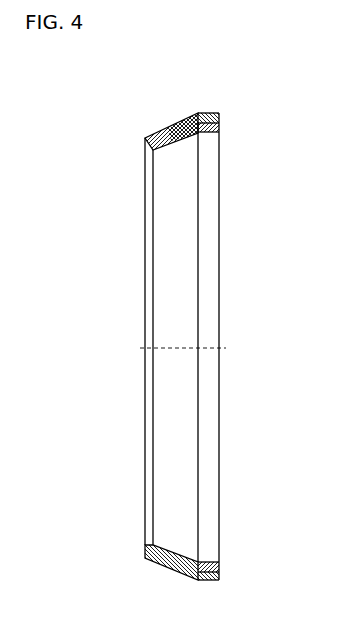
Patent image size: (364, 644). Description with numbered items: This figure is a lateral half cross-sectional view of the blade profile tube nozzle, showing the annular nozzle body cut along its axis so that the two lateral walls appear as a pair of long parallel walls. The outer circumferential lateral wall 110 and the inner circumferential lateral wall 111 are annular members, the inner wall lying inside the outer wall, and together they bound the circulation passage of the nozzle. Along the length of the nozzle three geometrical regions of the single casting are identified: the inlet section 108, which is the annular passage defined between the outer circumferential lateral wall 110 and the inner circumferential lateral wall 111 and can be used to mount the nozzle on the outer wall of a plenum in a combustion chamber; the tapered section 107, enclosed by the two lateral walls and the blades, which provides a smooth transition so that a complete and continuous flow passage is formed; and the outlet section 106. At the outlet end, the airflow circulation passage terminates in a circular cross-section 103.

The circular cross-section 103 is at (144, 553).
The outlet section 106 is at (146, 137).
The tapered section 107 is at (178, 126).
The inlet section 108 is at (221, 101).
The outer circumferential lateral wall 110 is at (221, 116).
The inner circumferential lateral wall 111 is at (221, 136).